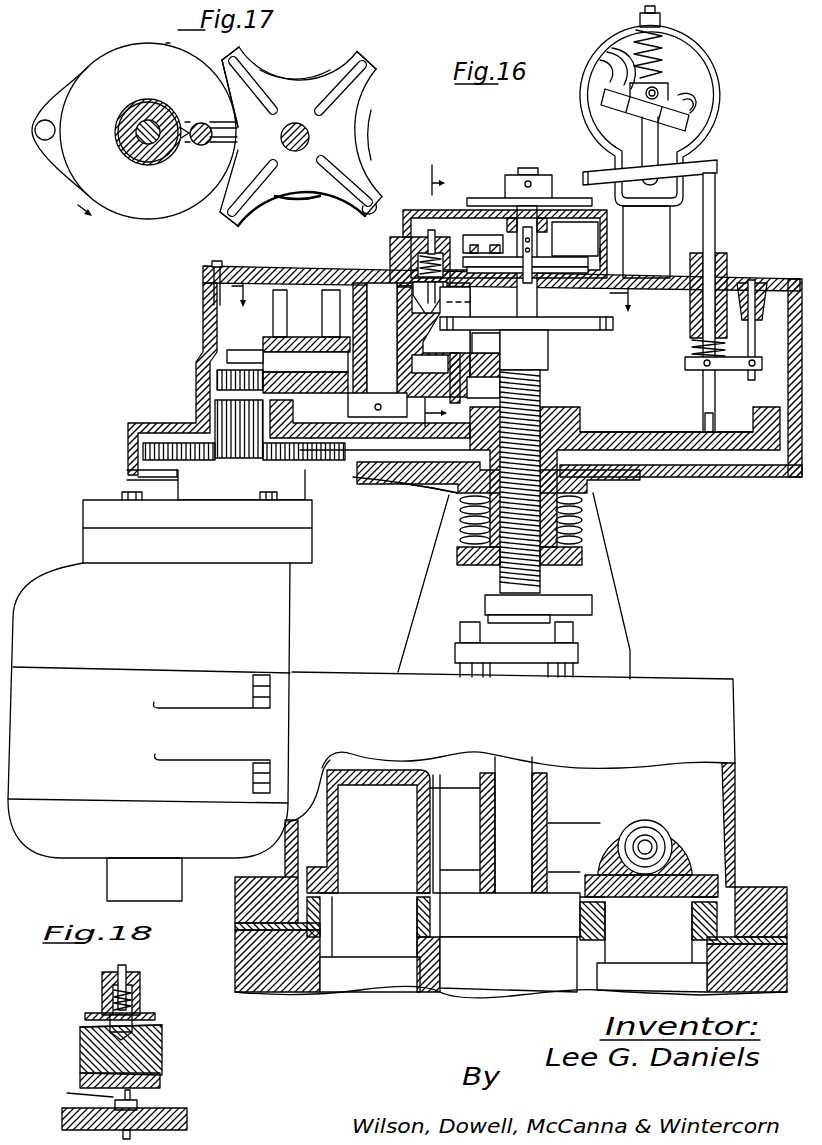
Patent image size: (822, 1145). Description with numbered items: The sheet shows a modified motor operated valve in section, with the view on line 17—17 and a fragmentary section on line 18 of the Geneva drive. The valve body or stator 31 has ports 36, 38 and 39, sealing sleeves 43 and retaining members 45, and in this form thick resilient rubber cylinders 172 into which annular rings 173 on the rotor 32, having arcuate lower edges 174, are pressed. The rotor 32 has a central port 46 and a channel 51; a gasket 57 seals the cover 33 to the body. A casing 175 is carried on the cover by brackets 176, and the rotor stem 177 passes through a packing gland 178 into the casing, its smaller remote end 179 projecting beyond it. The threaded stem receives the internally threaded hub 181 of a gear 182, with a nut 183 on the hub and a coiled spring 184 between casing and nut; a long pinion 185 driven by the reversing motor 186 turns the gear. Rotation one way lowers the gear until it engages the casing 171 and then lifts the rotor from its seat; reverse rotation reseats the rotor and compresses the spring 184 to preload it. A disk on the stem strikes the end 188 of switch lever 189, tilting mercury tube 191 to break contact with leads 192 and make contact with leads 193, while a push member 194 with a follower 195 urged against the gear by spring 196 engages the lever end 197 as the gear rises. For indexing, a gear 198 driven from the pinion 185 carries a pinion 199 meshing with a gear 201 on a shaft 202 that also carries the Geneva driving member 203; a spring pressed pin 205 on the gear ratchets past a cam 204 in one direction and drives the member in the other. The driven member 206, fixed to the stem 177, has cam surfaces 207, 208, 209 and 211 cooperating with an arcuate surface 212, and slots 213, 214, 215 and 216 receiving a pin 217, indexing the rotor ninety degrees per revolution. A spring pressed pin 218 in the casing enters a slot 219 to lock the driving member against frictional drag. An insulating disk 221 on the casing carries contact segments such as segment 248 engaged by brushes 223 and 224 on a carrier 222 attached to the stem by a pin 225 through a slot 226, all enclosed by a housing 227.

In FIG. 16, the line 17— 17 is at (442, 298).
In FIG. 16, the section line 18- 18 is at (423, 299).
In FIG. 16, the body or stator member 31 is at (275, 983).
In FIG. 16, the rotor member or plate 32 is at (703, 874).
In FIG. 16, the valve housing or cover 33 is at (738, 724).
In FIG. 16, the port 36 is at (643, 957).
In FIG. 16, the port 38 is at (357, 950).
In FIG. 16, the port 39 is at (442, 960).
In FIG. 16, the sleeve 43 is at (692, 937).
In FIG. 16, the retaining member 45 is at (692, 920).
In FIG. 16, the central port 46 is at (438, 872).
In FIG. 16, the channel 51 is at (411, 572).
In FIG. 16, the gasket 57 is at (768, 900).
In FIG. 16, the casing 171 is at (470, 452).
In FIG. 16, the resilient cylinder 172 is at (605, 918).
In FIG. 16, the annular rings 173 is at (580, 903).
In FIG. 16, the arcuate lower edges 174 is at (573, 918).
In FIG. 16, the casing 175 is at (799, 283).
In FIG. 18, the casing 175 is at (143, 1013).
In FIG. 16, the brackets 176 is at (617, 628).
In FIG. 16, the rotor stem 177 is at (527, 795).
In FIG. 17, the rotor stem 177 is at (294, 123).
In FIG. 16, the packing gland 178 is at (392, 672).
In FIG. 16, the remote end 179 is at (527, 170).
In FIG. 16, the hub 181 is at (569, 199).
In FIG. 16, the gear 182 is at (640, 450).
In FIG. 16, the nut 183 is at (583, 560).
In FIG. 16, the coiled spring 184 is at (582, 538).
In FIG. 16, the pinion 185 is at (222, 418).
In FIG. 16, the motor 186 is at (160, 696).
In FIG. 16, the end of switch lever 188 is at (592, 175).
In FIG. 16, the switch lever 189 is at (652, 147).
In FIG. 16, the mercury tube 191 is at (670, 97).
In FIG. 16, the leads 192 is at (697, 97).
In FIG. 16, the leads 193 is at (618, 60).
In FIG. 16, the push member 194 is at (716, 205).
In FIG. 16, the follower 195 is at (704, 424).
In FIG. 16, the spring 196 is at (691, 347).
In FIG. 16, the end of lever 197 is at (714, 161).
In FIG. 16, the gear 198 is at (143, 452).
In FIG. 16, the pinion 199 is at (218, 380).
In FIG. 16, the gear 201 is at (280, 377).
In FIG. 18, the gear 201 is at (187, 1110).
In FIG. 16, the shaft 202 is at (352, 309).
In FIG. 17, the shaft 202 is at (150, 113).
In FIG. 16, the driving member 203 is at (341, 322).
In FIG. 17, the driving member 203 is at (118, 58).
In FIG. 18, the driving member 203 is at (162, 1054).
In FIG. 16, the cam 204 is at (460, 366).
In FIG. 18, the cam 204 is at (68, 1095).
In FIG. 16, the spring pressed pin 205 is at (452, 368).
In FIG. 18, the spring pressed pin 205 is at (140, 1097).
In FIG. 16, the driven member 206 is at (583, 331).
In FIG. 17, the driven member 206 is at (343, 125).
In FIG. 17, the cam surface 207 is at (226, 82).
In FIG. 17, the cam surface 208 is at (302, 82).
In FIG. 17, the cam surface 209 is at (354, 152).
In FIG. 17, the cam surface 211 is at (290, 195).
In FIG. 17, the arcuate surface 212 is at (168, 43).
In FIG. 17, the slot 213 is at (241, 58).
In FIG. 17, the slot 214 is at (369, 60).
In FIG. 17, the slot 215 is at (374, 210).
In FIG. 17, the slot 216 is at (223, 213).
In FIG. 17, the pin 217 is at (47, 121).
In FIG. 16, the spring pressed pin 218 is at (447, 286).
In FIG. 17, the spring pressed pin 218 is at (192, 146).
In FIG. 18, the spring pressed pin 218 is at (105, 1013).
In FIG. 16, the slot 219 is at (391, 307).
In FIG. 17, the slot 219 is at (220, 136).
In FIG. 18, the slot 219 is at (162, 1032).
In FIG. 16, the disk of insulation material 221 is at (572, 273).
In FIG. 16, the brush carrier 222 is at (475, 236).
In FIG. 16, the brush 223 is at (455, 247).
In FIG. 16, the brush 224 is at (495, 246).
In FIG. 16, the pin 225 is at (548, 257).
In FIG. 16, the slot 226 is at (545, 235).
In FIG. 16, the housing 227 is at (607, 239).
In FIG. 16, the contact segment 248 is at (607, 254).